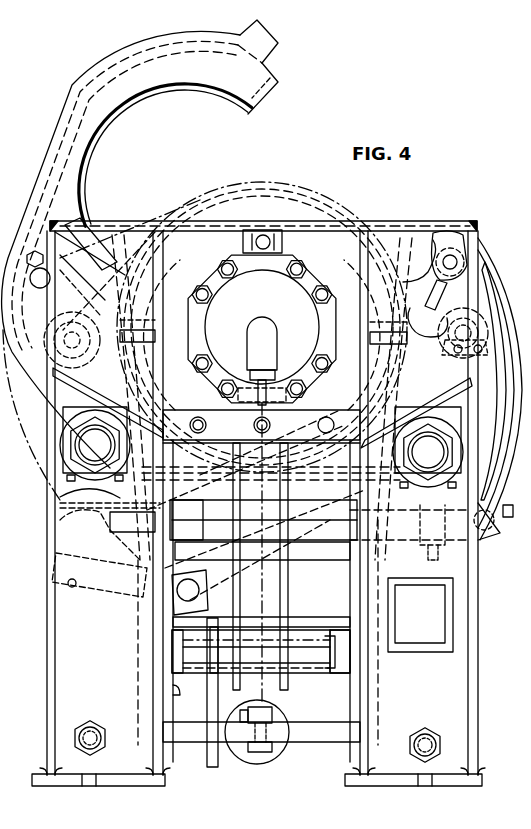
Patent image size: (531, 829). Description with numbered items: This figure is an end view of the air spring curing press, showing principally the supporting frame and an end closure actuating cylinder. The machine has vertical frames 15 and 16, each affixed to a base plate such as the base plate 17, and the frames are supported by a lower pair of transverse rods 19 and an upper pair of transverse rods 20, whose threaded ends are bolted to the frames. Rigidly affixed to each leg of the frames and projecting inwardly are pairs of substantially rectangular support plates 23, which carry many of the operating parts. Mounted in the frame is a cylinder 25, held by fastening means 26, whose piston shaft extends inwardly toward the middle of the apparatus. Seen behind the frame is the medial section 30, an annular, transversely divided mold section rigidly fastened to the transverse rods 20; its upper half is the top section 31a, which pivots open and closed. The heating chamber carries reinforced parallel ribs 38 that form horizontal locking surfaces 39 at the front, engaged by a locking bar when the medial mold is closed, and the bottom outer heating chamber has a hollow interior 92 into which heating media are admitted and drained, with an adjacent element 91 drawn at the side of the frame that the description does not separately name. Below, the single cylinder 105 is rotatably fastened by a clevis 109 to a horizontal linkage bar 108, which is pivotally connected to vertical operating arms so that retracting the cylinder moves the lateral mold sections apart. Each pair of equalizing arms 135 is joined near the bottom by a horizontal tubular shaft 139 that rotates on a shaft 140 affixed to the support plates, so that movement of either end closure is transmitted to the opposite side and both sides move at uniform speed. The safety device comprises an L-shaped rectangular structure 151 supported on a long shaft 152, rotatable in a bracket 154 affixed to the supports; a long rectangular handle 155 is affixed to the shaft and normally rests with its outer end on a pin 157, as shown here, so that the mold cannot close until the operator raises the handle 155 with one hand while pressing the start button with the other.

The vertical frame 15 is at (62, 641).
The vertical frame 16 is at (7, 549).
The base plate 17 is at (166, 780).
The lower transverse rod 19 is at (432, 745).
The upper transverse rod 20 is at (432, 452).
The support plate 23 is at (170, 692).
The cylinder 25 is at (296, 310).
The fastening means 26 is at (304, 272).
The medial section 30 is at (74, 85).
The top section 31a is at (93, 128).
The reinforced parallel rib 38 is at (263, 66).
The horizontal locking surface 39 is at (248, 33).
The latch 91 is at (486, 278).
The hollow interior 92 is at (481, 540).
The cylinder 105 is at (240, 765).
The horizontal linkage bar 108 is at (338, 735).
The clevis 109 is at (273, 716).
The equalizing arm 135 is at (283, 587).
The horizontal tubular shaft 139 is at (300, 645).
The shaft 140 is at (330, 660).
The L-shaped rectangular structure 151 is at (75, 586).
The long shaft 152 is at (192, 592).
The bracket 154 is at (120, 563).
The handle 155 is at (463, 384).
The pin 157 is at (463, 360).